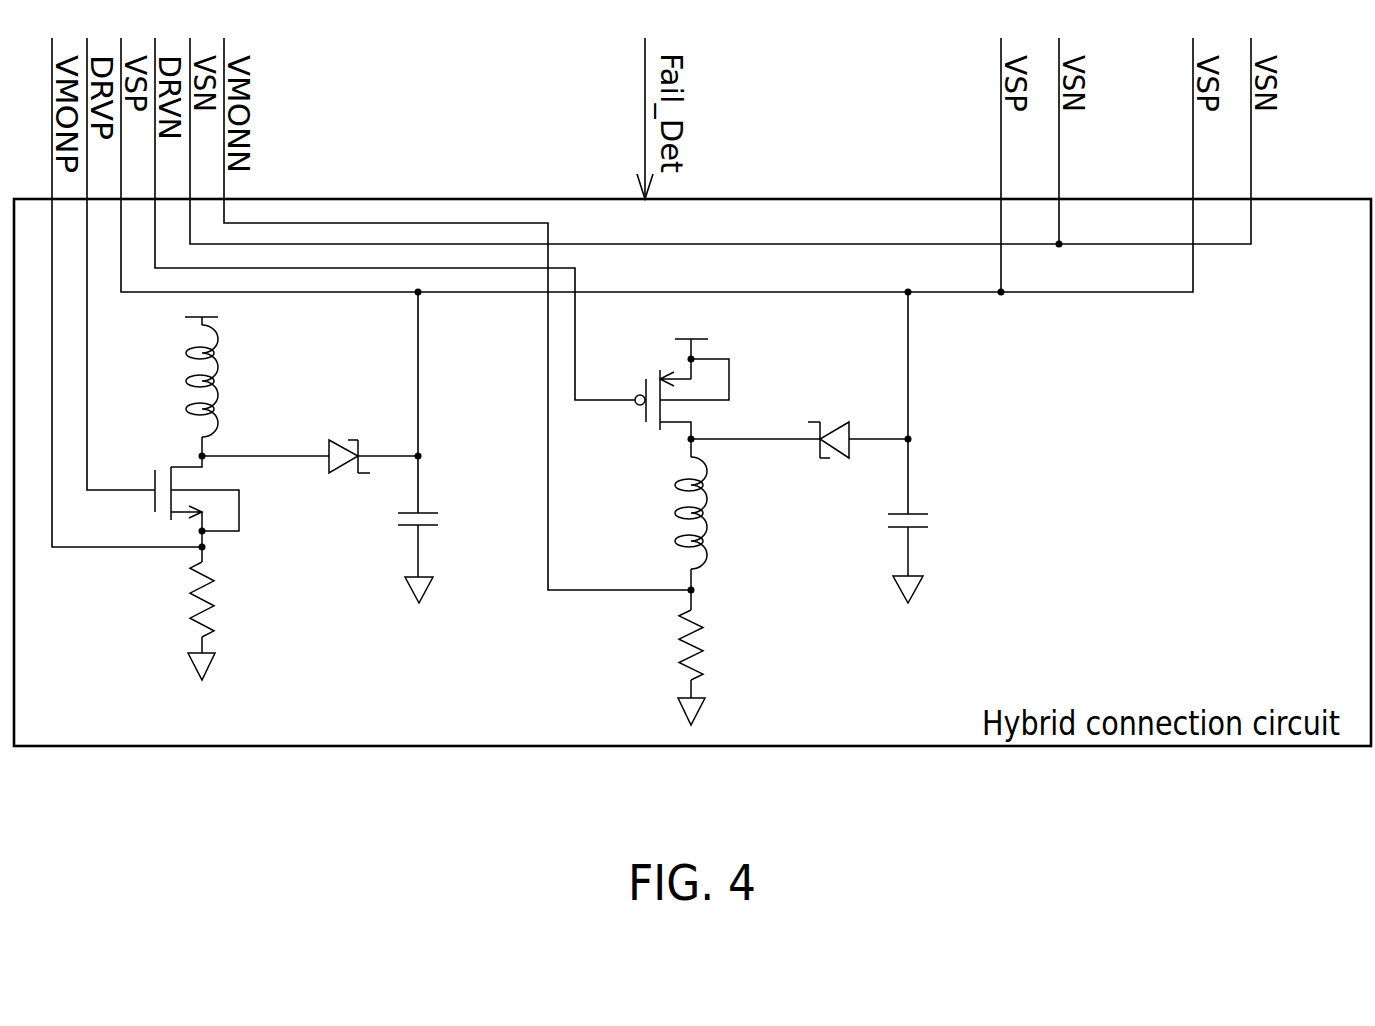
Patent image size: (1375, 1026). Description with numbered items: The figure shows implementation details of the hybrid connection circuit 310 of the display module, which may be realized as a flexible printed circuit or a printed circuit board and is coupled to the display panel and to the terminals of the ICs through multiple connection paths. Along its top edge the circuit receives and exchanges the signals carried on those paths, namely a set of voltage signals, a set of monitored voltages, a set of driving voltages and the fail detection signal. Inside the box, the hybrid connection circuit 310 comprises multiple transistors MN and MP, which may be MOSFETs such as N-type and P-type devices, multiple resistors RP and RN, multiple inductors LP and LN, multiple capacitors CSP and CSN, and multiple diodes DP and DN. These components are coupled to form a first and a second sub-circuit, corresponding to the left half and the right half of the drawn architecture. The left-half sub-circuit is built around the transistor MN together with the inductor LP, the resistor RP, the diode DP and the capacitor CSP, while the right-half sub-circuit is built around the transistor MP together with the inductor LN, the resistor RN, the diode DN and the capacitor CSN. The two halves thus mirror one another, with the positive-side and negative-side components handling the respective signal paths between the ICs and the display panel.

The hybrid connection circuit 310 is at (909, 199).
The inductor LP is at (180, 386).
The transistor MN is at (178, 487).
The resistor RP is at (225, 613).
The diode DP is at (345, 435).
The capacitor CSP is at (451, 558).
The transistor MP is at (676, 402).
The inductor LN is at (714, 514).
The resistor RN is at (718, 657).
The diode DN is at (831, 418).
The capacitor CSN is at (947, 552).